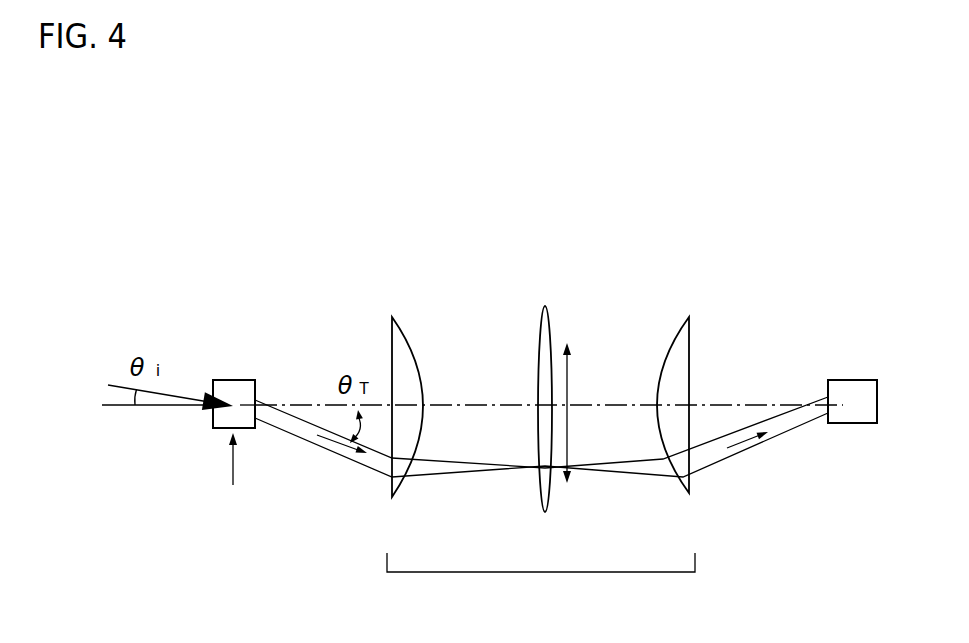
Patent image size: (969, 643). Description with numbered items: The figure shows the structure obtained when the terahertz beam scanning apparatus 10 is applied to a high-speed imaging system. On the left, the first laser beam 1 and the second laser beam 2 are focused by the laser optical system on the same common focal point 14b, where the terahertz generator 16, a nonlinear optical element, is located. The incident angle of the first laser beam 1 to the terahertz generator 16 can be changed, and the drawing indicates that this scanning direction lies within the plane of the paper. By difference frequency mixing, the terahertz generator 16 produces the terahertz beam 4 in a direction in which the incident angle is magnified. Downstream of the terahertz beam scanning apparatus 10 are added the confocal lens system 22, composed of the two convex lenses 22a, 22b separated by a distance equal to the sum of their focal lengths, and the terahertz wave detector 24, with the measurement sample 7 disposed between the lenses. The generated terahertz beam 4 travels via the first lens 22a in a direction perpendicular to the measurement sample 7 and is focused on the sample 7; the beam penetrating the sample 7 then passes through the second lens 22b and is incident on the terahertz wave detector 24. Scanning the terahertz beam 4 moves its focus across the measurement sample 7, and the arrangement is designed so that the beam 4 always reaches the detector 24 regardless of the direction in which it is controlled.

The first laser beam 1 is at (112, 383).
The second laser beam 2 is at (110, 408).
The terahertz beam 4 is at (355, 450).
The measurement sample 7 is at (540, 293).
The terahertz beam scanning apparatus 10 is at (179, 316).
The common focal point 14b is at (227, 477).
The terahertz generator 16 is at (237, 388).
The confocal lens system 22 is at (541, 584).
The first lens 22a is at (402, 347).
The second lens 22b is at (682, 340).
The terahertz wave detector 24 is at (852, 415).